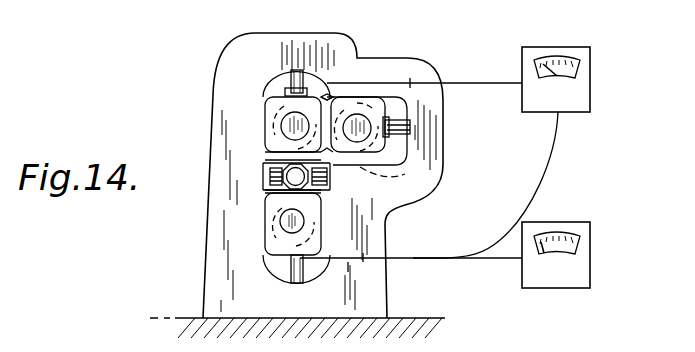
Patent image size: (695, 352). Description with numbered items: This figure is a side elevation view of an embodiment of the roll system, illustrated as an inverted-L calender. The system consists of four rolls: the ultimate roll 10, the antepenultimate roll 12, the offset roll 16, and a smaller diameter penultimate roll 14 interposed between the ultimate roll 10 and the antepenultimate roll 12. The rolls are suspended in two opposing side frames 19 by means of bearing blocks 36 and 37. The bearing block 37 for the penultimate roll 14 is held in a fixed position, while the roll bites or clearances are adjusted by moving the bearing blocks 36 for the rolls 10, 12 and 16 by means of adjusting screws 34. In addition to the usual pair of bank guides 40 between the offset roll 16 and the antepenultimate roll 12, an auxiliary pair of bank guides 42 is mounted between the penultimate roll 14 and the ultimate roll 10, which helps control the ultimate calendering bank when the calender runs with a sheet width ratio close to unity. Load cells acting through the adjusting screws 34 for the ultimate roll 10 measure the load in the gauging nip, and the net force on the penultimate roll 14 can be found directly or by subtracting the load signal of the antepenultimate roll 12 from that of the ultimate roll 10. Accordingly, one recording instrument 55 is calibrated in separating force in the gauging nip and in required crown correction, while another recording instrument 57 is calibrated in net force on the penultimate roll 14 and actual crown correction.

The ultimate roll 10 is at (265, 222).
The antepenultimate roll 12 is at (280, 106).
The penultimate roll 14 is at (282, 160).
The offset roll 16 is at (382, 139).
The side frame 19 is at (398, 58).
The adjusting screw 34 is at (288, 90).
The bearing block 36 is at (268, 126).
The bearing block 37 is at (318, 174).
The bank guide 40 is at (332, 93).
The auxiliary bank guide 42 is at (314, 188).
The recording instrument 55 is at (582, 262).
The recording instrument 57 is at (580, 83).